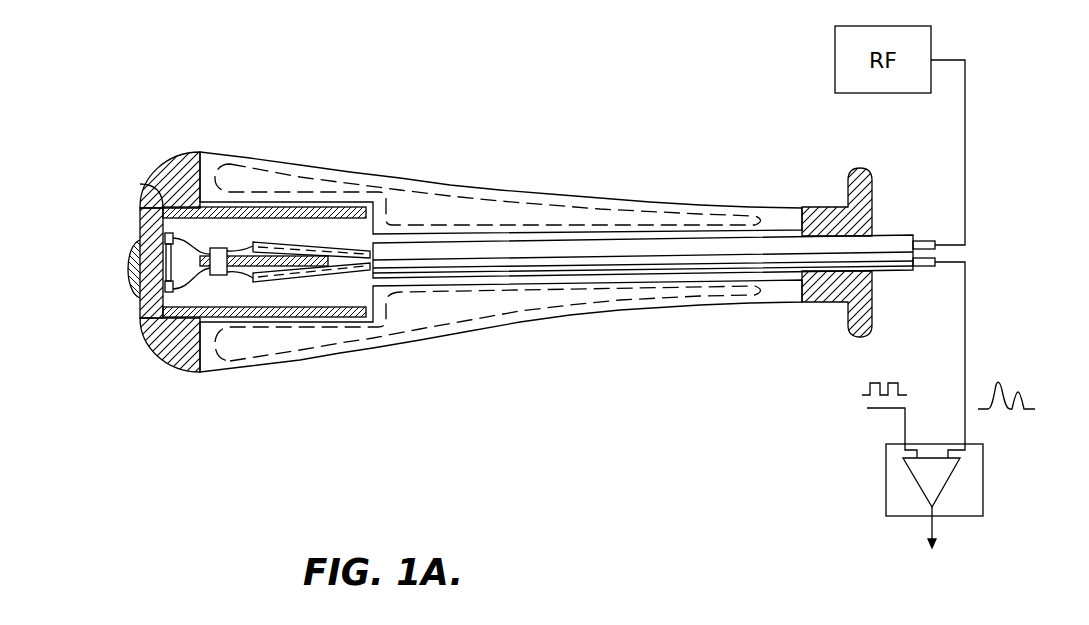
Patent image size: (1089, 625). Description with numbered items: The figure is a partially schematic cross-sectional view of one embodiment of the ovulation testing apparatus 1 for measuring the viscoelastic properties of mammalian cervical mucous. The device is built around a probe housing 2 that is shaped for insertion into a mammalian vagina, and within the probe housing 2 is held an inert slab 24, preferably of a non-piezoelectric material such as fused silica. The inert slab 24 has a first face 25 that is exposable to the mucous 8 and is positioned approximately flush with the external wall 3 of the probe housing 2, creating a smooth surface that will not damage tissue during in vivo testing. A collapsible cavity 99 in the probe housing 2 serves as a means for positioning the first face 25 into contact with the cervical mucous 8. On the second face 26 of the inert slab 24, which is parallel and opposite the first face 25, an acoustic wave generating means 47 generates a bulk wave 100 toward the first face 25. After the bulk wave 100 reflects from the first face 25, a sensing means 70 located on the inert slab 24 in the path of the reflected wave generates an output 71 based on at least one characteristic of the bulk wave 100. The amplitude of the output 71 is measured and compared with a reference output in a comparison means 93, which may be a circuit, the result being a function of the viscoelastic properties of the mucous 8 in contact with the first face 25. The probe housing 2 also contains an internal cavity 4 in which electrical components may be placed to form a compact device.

The ovulation testing apparatus 1 is at (482, 168).
The probe housing 2 is at (253, 148).
The external wall 3 is at (175, 152).
The internal cavity 4 is at (360, 230).
The mucous 8 is at (130, 283).
The inert slab 24 is at (140, 210).
The first face 25 is at (140, 318).
The second face 26 is at (140, 184).
The acoustic wave generating means 47 is at (168, 238).
The sensing means 70 is at (171, 362).
The output 71 is at (1018, 396).
The comparison means 93 is at (990, 475).
The collapsible cavity 99 is at (490, 213).
The bulk wave 100 is at (146, 238).